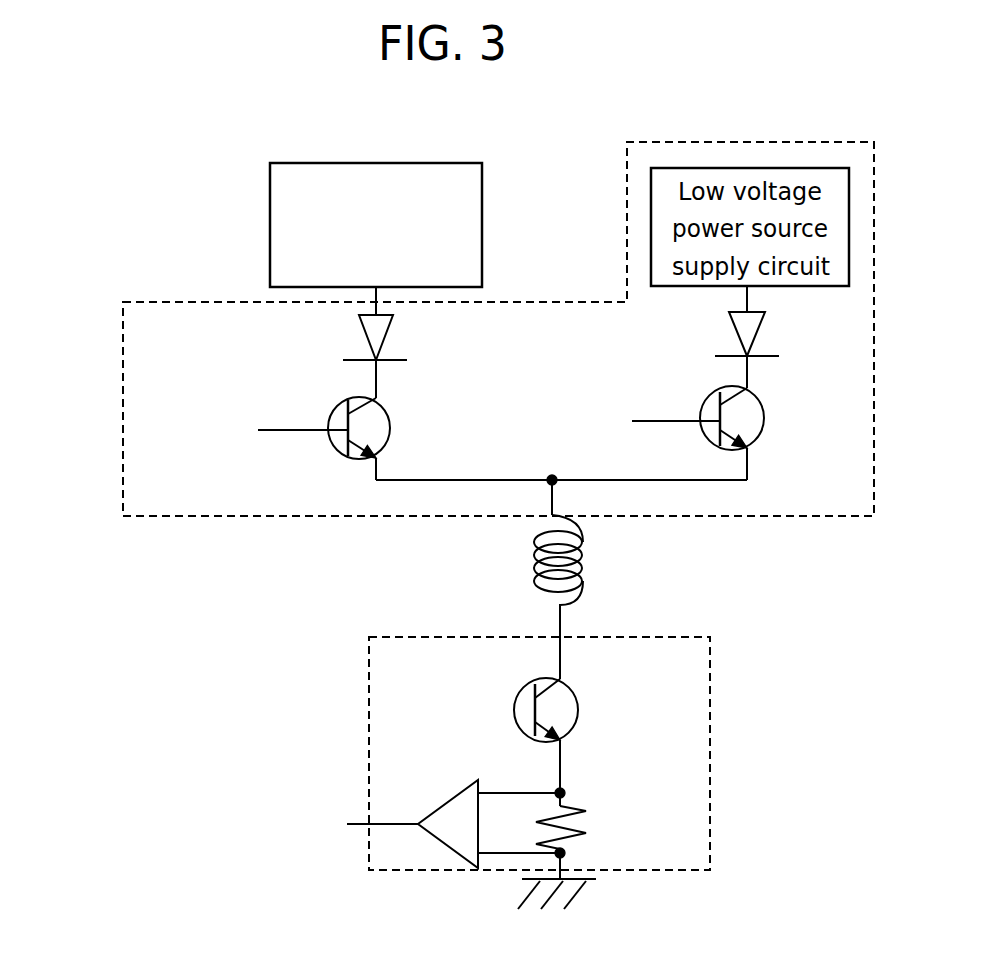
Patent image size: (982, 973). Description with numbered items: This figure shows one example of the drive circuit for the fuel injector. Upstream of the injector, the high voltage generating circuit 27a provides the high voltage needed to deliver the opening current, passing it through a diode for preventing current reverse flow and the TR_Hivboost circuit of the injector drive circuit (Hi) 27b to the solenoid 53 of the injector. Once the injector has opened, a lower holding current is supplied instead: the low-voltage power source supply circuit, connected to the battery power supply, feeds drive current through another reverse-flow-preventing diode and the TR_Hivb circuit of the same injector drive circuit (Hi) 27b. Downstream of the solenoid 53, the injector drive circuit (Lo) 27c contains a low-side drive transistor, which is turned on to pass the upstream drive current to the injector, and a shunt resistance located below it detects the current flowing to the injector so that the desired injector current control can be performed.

The high voltage generating circuit 27a is at (270, 244).
The injector drive circuit (Hi) 27b is at (128, 408).
The injector drive circuit (Lo) 27c is at (377, 735).
The solenoid 53 is at (590, 556).